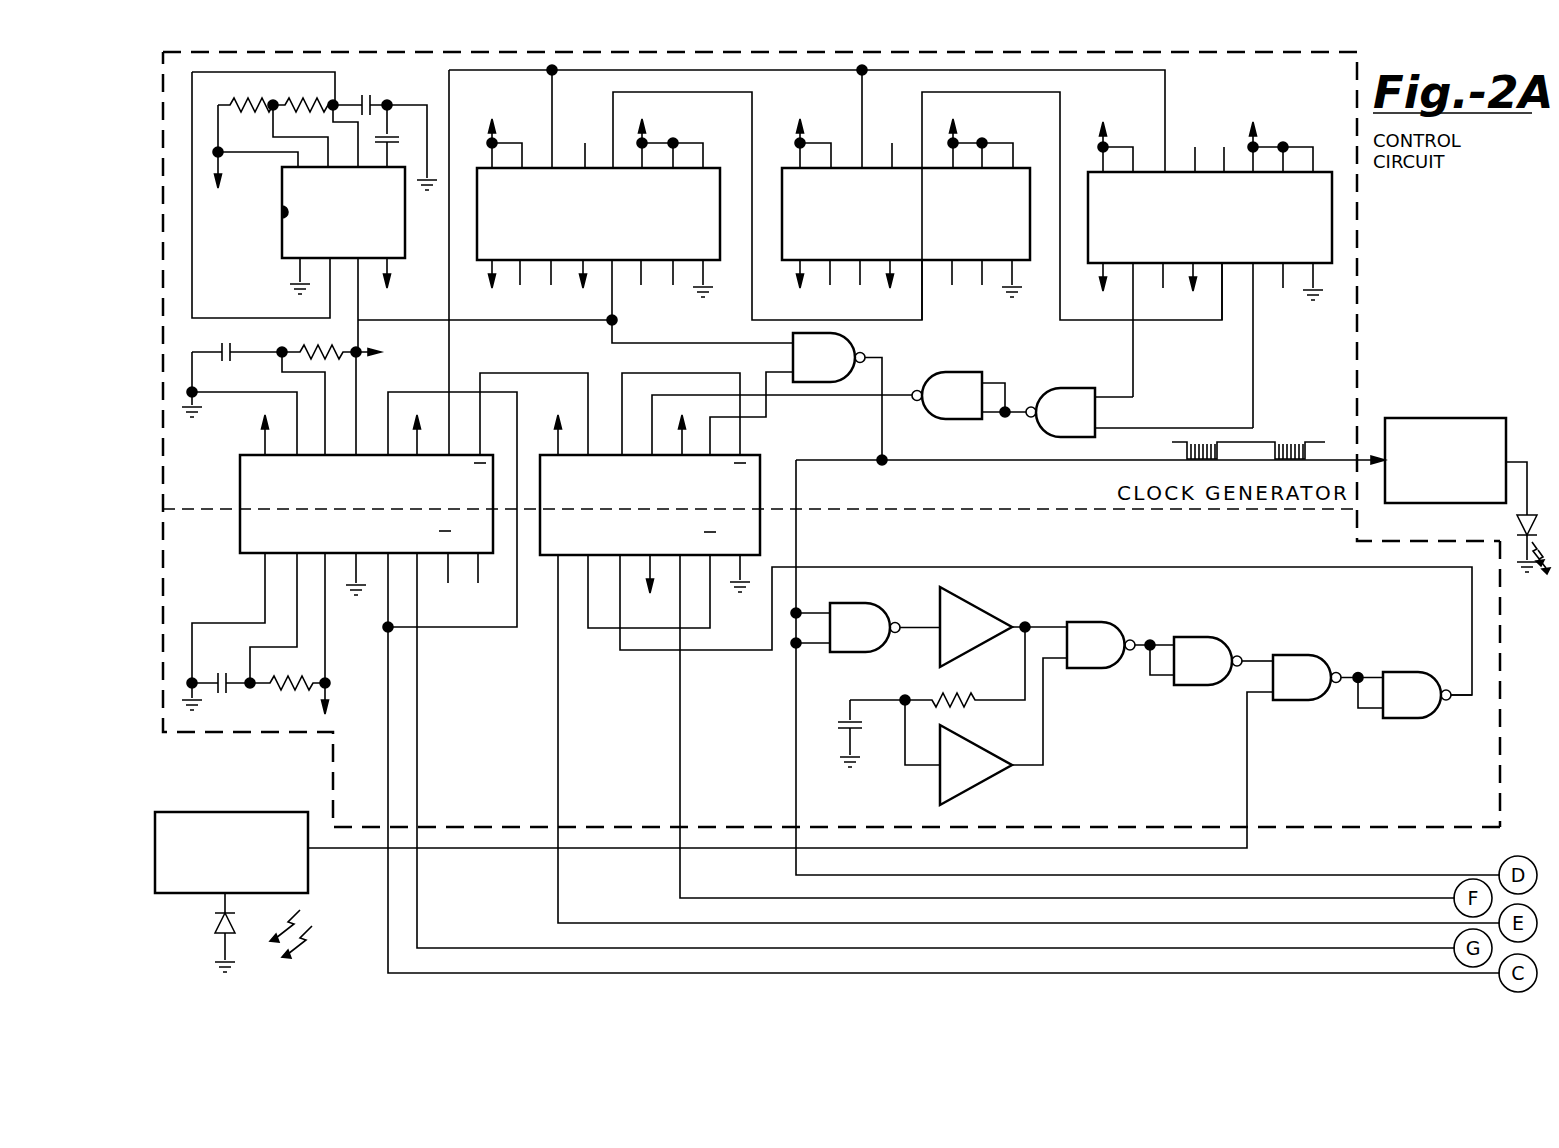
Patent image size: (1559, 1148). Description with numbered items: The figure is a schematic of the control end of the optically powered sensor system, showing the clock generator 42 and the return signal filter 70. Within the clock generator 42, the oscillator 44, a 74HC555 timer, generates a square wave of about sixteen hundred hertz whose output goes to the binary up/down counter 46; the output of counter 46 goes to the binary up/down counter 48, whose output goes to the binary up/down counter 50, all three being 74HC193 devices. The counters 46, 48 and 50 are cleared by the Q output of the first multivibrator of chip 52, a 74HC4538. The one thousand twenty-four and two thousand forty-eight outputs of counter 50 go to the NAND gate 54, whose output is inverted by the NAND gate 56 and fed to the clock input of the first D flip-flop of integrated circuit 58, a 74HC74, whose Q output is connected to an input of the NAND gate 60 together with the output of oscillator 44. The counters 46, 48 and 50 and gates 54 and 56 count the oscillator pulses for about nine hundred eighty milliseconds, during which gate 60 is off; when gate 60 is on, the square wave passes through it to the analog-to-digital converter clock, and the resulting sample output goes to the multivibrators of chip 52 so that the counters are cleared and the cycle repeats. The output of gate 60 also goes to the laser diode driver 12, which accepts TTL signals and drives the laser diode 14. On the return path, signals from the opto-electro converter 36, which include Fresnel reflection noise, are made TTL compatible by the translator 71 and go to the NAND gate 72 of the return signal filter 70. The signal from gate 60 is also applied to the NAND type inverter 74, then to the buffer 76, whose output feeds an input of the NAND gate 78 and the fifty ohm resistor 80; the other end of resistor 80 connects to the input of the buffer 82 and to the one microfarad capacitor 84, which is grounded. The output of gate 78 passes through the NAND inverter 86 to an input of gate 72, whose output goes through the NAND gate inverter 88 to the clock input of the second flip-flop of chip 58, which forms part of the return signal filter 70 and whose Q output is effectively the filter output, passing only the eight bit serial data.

The laser diode driver 12 is at (1418, 418).
The laser diode 14 is at (1516, 522).
The opto-electro converter 36 is at (222, 913).
The clock generator 42 is at (1358, 266).
The oscillator 44 is at (282, 255).
The binary up/down counter 46 is at (722, 168).
The binary up/down counter 48 is at (1033, 168).
The binary up/down counter 50 is at (1331, 172).
The chip 52 is at (240, 493).
The NAND gate 54 is at (1050, 388).
The NAND gate 56 is at (952, 372).
The integrated circuit 58 is at (760, 472).
The NAND gate 60 is at (858, 345).
The return signal filter 70 is at (1500, 697).
The translator 71 is at (208, 812).
The NAND gate 72 is at (1297, 700).
The NAND type inverter 74 is at (857, 603).
The buffer 76 is at (990, 612).
The NAND gate 78 is at (1085, 668).
The resistor 80 is at (943, 698).
The buffer 82 is at (982, 785).
The capacitor 84 is at (852, 722).
The NAND inverter 86 is at (1183, 685).
The NAND gate inverter 88 is at (1398, 718).